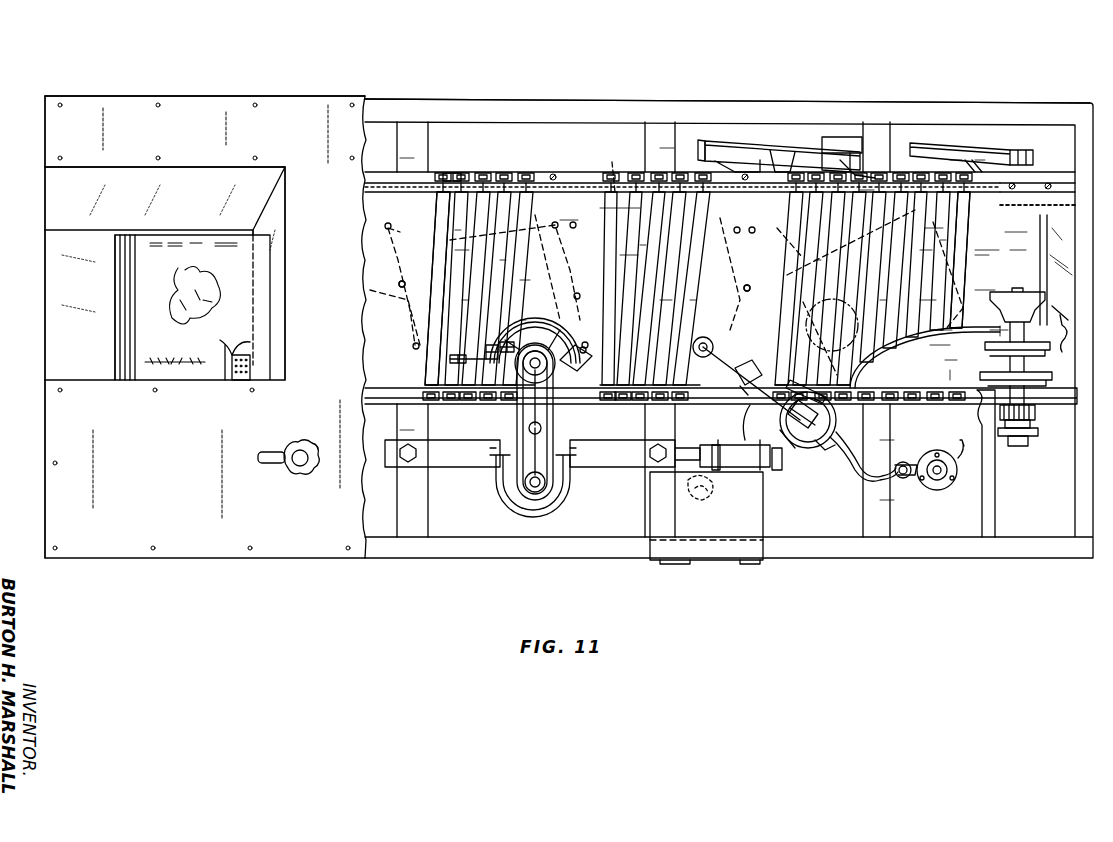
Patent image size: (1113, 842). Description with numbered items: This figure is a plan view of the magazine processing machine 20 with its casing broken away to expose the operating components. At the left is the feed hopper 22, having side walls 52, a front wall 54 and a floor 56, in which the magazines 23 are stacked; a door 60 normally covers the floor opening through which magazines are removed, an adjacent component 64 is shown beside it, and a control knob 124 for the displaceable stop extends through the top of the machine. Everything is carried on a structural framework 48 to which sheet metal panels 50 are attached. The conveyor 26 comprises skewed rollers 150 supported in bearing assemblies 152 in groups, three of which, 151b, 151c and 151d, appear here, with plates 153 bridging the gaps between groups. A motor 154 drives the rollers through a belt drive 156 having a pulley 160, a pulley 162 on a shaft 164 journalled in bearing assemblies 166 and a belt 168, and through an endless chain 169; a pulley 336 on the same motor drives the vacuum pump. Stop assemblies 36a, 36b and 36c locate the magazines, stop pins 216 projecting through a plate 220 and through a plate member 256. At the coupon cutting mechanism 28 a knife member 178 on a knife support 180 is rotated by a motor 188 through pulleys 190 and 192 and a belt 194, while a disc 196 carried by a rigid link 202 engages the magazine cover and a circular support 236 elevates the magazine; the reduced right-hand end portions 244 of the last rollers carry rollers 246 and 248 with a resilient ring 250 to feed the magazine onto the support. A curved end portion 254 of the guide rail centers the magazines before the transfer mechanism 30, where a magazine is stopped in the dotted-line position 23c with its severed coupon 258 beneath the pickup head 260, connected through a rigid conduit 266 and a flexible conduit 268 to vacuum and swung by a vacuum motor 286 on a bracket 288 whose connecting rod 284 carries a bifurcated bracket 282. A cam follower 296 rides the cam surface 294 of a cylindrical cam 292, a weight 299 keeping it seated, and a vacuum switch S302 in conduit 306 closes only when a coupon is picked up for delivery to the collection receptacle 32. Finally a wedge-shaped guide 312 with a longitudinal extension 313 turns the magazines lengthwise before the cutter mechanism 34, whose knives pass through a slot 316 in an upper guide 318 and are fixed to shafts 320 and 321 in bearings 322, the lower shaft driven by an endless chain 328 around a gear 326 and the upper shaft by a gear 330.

The magazine processing machine 20 is at (81, 86).
The feed hopper 22 is at (71, 204).
The magazines 23 is at (116, 334).
The dotted line position of magazine 23c is at (615, 166).
The conveyor 26 is at (460, 120).
The coupon cutting mechanism 28 is at (602, 456).
The transfer mechanism 30 is at (846, 478).
The collection receptacle 32 is at (706, 518).
The cutter mechanism 34 is at (980, 366).
The stop assembly 36a is at (378, 205).
The stop assembly 36b is at (576, 191).
The stop assembly 36c is at (765, 197).
The structural framework 48 is at (620, 561).
The sheet metal panels 50 is at (290, 556).
The side walls 52 is at (165, 273).
The front wall 54 is at (282, 288).
The floor 56 is at (58, 346).
The door 60 is at (262, 351).
The switch 64 is at (246, 380).
The control knob 124 is at (305, 444).
The rollers 150 is at (480, 226).
The group of rollers 151b is at (505, 165).
The group of rollers 151c is at (693, 132).
The group of rollers 151d is at (862, 158).
The bearing assemblies 152 is at (505, 175).
The plates 153 is at (470, 190).
The motor 154 is at (745, 138).
The belt drive 156 is at (929, 133).
The pulley 160 is at (835, 150).
The pulley 162 is at (985, 148).
The shaft 164 is at (990, 176).
The bearing assemblies 166 is at (940, 404).
The belt 168 is at (878, 155).
The endless chain 169 is at (955, 205).
The knife member 178 is at (598, 375).
The knife support 180 is at (565, 345).
The motor 188 is at (540, 512).
The pulley 190 is at (545, 485).
The pulley 192 is at (540, 345).
The belt 194 is at (520, 425).
The disc 196 is at (553, 398).
The rigid link 202 is at (550, 425).
The stop pins 216 is at (410, 300).
The plate 220 is at (528, 267).
The circular support 236 is at (588, 340).
The reduced diameter end portions 244 is at (470, 365).
The rollers 246 is at (460, 370).
The roller 248 is at (492, 343).
The resilient ring 250 is at (508, 340).
The inwardly curved end portion 254 is at (591, 288).
The plate member 256 is at (841, 292).
The severed coupon 258 is at (749, 291).
The pickup head 260 is at (720, 472).
The rigid conduit 266 is at (712, 347).
The flexible conduit 268 is at (880, 480).
The bifurcated bracket 282 is at (822, 448).
The connecting rod 284 is at (780, 470).
The vacuum motor 286 is at (758, 470).
The bracket 288 is at (693, 503).
The cylindrical cam 292 is at (799, 459).
The cam surface 294 is at (832, 463).
The cam follower 296 is at (760, 432).
The weight 299 is at (806, 325).
The conduit 306 is at (905, 478).
The wedge-shaped guide 312 is at (885, 340).
The longitudinal extension 313 is at (1060, 314).
The slot 316 is at (1018, 292).
The upper guide 318 is at (1064, 248).
The shaft 320 is at (1030, 424).
The shaft 321 is at (1016, 448).
The bearings 322 is at (1030, 358).
The gear 326 is at (1032, 438).
The endless chain 328 is at (911, 454).
The gear 330 is at (1035, 408).
The pulley 336 is at (810, 150).
The vacuum switch S302 is at (937, 490).